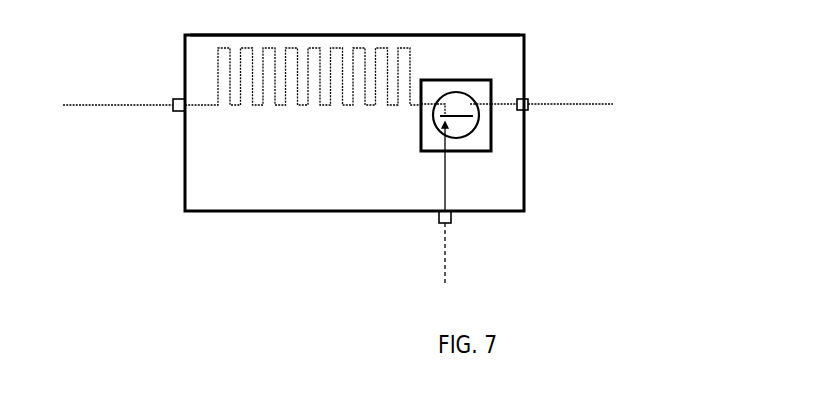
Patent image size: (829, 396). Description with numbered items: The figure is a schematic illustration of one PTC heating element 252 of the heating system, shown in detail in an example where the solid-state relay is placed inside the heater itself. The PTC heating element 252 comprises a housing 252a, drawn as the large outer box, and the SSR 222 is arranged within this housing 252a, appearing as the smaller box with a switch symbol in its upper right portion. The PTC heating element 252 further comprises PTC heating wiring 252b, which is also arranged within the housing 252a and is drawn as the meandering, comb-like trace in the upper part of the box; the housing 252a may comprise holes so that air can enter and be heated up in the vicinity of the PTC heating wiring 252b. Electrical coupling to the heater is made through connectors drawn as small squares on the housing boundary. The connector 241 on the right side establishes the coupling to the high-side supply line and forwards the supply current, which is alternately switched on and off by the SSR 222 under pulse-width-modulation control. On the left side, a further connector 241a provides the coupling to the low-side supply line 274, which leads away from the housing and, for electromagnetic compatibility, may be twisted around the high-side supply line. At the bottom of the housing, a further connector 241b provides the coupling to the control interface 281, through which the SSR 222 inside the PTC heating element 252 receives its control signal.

The PTC heating element 252 is at (185, 50).
The housing 252a is at (288, 35).
The PTC heating wiring 252b is at (325, 107).
The SSR 222 is at (480, 80).
The connector 241 is at (528, 100).
The connector 241a is at (173, 99).
The connector 241b is at (439, 220).
The low-side supply line 274 is at (79, 105).
The control interface 281 is at (445, 262).